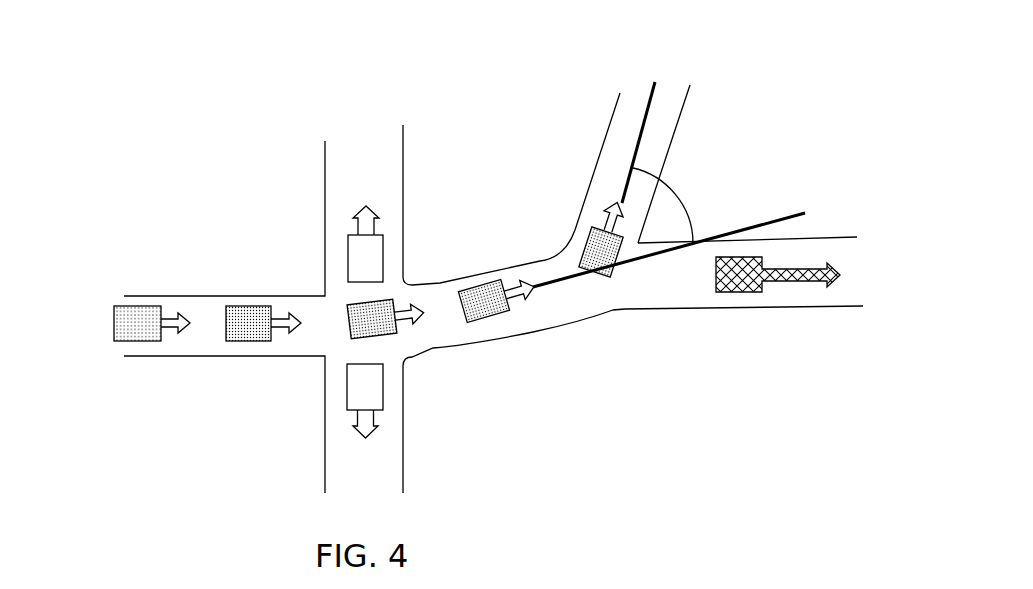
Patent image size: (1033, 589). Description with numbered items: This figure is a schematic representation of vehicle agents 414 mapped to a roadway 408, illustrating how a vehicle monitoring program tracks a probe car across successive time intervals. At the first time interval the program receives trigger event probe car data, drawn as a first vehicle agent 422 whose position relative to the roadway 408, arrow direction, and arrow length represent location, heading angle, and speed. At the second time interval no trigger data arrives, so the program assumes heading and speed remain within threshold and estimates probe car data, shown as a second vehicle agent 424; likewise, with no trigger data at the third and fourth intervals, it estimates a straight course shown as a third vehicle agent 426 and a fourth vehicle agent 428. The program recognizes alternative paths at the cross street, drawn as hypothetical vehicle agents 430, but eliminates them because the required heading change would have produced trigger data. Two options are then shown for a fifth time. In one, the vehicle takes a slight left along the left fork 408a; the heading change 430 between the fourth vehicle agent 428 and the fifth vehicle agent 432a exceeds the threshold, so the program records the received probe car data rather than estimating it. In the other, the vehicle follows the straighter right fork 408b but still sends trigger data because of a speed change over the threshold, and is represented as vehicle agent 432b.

The roadway 408 is at (290, 276).
The left fork 408a is at (597, 195).
The right fork 408b is at (676, 288).
The vehicle agents 414 is at (520, 376).
The first vehicle agent 422 is at (130, 323).
The second vehicle agent 424 is at (255, 330).
The third vehicle agent 426 is at (378, 328).
The fourth vehicle agent 428 is at (490, 287).
The hypothetical vehicle agents 430 is at (358, 253).
The fifth vehicle agent 432a is at (612, 270).
The vehicle agent 432b is at (750, 270).